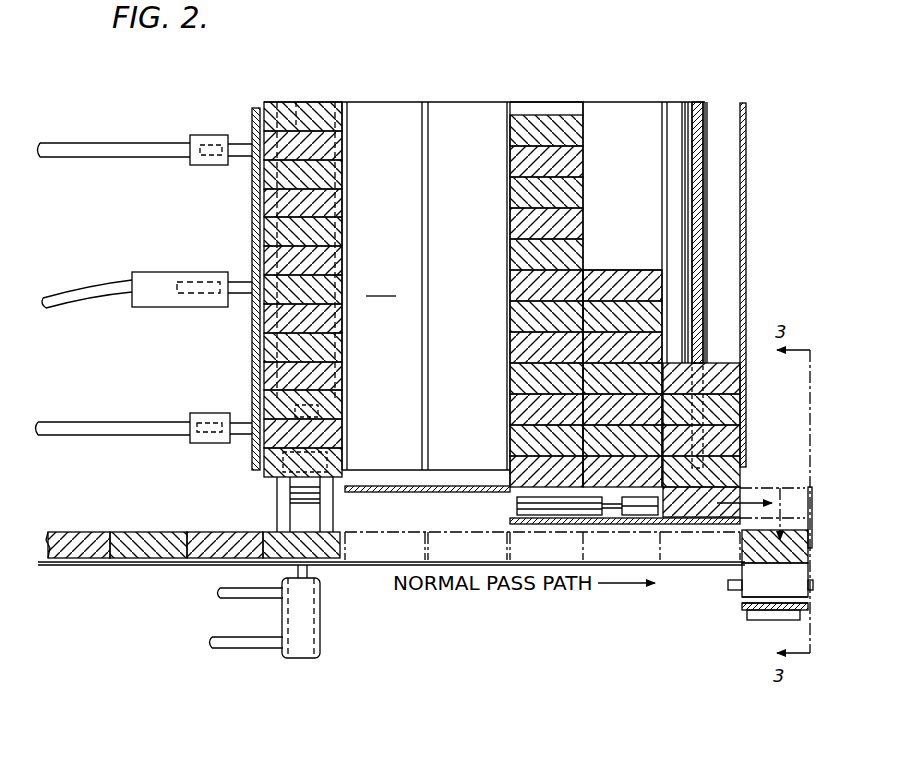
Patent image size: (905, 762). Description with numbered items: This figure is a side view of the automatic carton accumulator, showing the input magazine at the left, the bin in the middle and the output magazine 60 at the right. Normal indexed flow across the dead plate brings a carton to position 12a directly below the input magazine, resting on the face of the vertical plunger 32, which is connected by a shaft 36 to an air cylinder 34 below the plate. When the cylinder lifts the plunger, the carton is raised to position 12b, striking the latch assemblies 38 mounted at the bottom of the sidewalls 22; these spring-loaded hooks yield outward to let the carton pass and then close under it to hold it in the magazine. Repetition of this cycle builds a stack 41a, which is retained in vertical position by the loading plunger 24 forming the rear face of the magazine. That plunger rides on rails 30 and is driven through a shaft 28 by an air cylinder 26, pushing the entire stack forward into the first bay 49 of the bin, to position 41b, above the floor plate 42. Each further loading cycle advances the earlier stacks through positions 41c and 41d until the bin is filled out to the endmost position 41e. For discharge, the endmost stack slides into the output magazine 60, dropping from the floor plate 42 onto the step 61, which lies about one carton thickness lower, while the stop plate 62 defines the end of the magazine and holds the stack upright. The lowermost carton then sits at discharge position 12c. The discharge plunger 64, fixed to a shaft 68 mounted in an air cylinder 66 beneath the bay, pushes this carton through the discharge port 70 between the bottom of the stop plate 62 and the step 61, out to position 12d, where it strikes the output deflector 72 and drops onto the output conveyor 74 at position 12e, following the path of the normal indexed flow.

The carton position below input magazine 12a is at (272, 532).
The carton position within input magazine 12b is at (330, 455).
The discharge position 12c is at (748, 488).
The carton position beyond discharge port 12d is at (770, 490).
The carton position on output conveyor 12e is at (738, 565).
The sidewalls 22 is at (296, 102).
The loading plunger 24 is at (252, 193).
The air cylinder 26 is at (145, 270).
The shaft 28 is at (242, 282).
The rails 30 is at (148, 143).
The vertical plunger 32 is at (278, 566).
The air cylinder 34 is at (316, 628).
The shaft 36 is at (310, 578).
The latch assemblies 38 is at (262, 470).
The stack of cartons in input magazine 41a is at (312, 103).
The stack position in first bay 41b is at (373, 117).
The stack position in bin 41c is at (452, 117).
The stack position in bin 41d is at (548, 117).
The endmost stack position 41e is at (646, 214).
The floor plate 42 is at (450, 486).
The bay 49 is at (381, 285).
The output magazine 60 is at (667, 93).
The step 61 is at (707, 532).
The stop plate 62 is at (747, 250).
The discharge plunger 64 is at (637, 530).
The air cylinder 66 is at (517, 503).
The shaft 68 is at (590, 535).
The discharge port 70 is at (742, 472).
The output deflector 72 is at (770, 548).
The output conveyor 74 is at (746, 612).